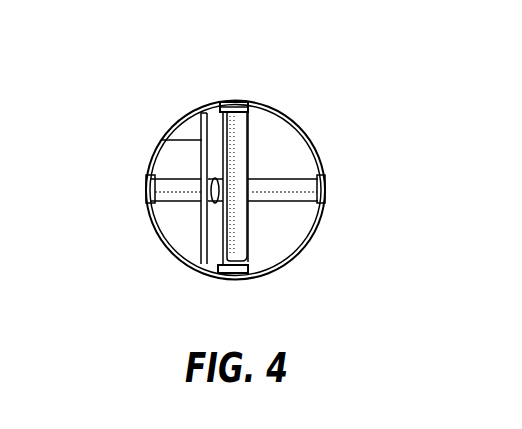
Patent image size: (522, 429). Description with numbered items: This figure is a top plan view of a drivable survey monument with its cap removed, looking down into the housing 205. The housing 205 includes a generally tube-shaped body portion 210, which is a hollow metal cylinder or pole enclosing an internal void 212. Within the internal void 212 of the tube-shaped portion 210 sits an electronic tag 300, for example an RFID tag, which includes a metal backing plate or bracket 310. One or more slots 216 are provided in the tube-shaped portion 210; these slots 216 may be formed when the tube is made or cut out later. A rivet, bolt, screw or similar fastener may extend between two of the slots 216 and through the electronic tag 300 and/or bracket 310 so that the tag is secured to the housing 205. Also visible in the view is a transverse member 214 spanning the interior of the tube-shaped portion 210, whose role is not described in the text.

The housing 205 is at (322, 205).
The tube-shaped body portion 210 is at (185, 118).
The internal void 212 is at (283, 213).
The transverse bar 214 is at (290, 181).
The slots 216 is at (237, 102).
The electronic tag 300 is at (240, 137).
The bracket 310 is at (163, 142).